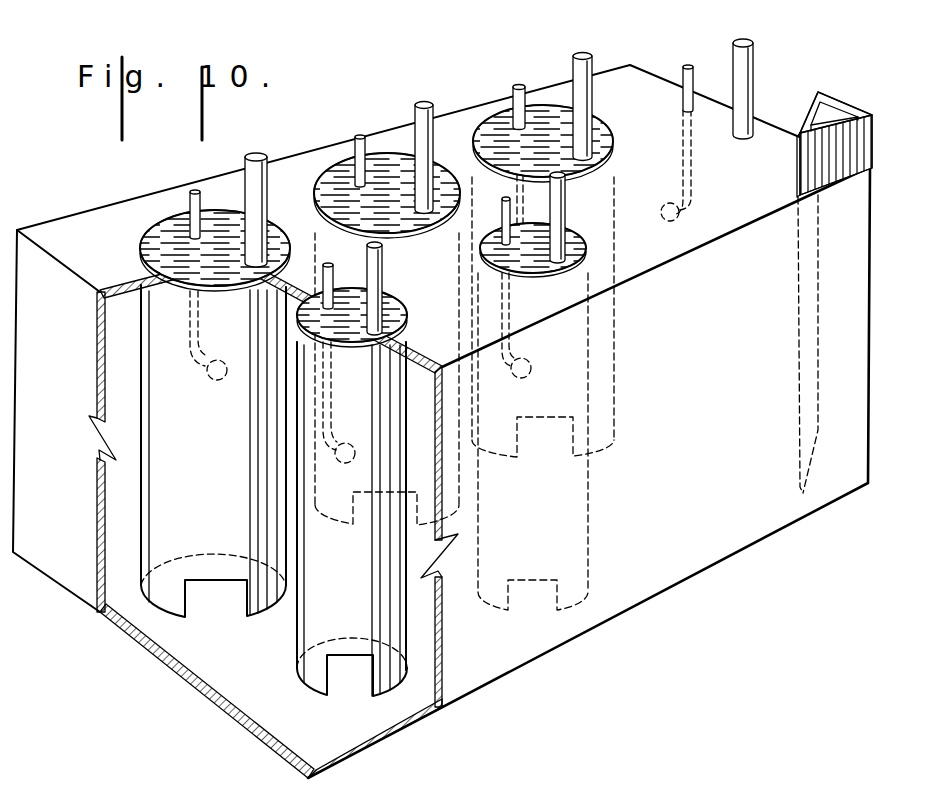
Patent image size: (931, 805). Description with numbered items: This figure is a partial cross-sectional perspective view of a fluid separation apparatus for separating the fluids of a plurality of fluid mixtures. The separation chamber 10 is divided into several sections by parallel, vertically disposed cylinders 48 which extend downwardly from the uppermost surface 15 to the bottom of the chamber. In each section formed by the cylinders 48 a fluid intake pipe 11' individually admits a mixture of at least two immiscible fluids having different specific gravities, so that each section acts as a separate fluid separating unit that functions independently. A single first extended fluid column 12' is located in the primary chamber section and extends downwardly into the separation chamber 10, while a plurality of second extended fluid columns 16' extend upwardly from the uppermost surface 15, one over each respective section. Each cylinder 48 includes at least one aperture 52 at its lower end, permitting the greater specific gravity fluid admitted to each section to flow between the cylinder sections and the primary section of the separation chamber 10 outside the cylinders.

The separation chamber 10 is at (723, 357).
The fluid intake pipe 11' is at (413, 162).
The first extended fluid column 12' is at (847, 280).
The uppermost surface 15 is at (97, 310).
The second extended fluid column 16' is at (507, 181).
The cylinder 48 is at (232, 414).
The aperture 52 is at (188, 603).